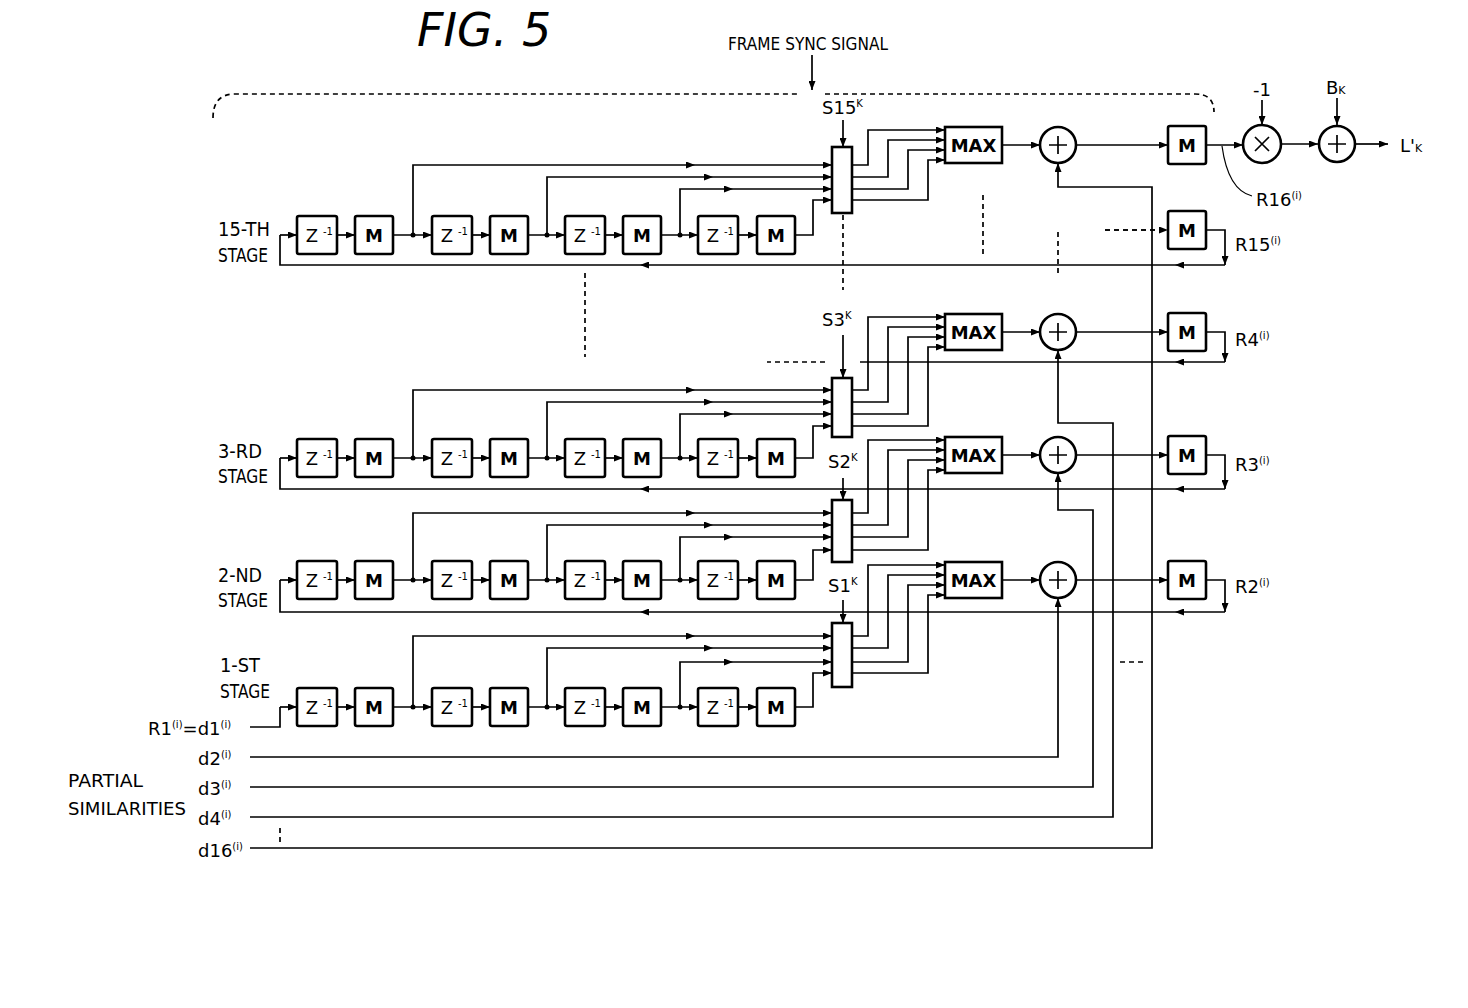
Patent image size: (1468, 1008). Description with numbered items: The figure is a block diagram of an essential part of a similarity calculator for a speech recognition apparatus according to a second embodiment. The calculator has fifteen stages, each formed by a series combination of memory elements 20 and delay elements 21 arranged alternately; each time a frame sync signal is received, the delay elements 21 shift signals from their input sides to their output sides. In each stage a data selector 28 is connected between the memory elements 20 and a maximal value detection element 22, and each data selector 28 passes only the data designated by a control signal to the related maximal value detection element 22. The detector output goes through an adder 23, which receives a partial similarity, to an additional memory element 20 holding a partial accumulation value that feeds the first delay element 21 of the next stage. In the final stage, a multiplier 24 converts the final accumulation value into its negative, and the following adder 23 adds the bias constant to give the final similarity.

The memory element 20 is at (390, 216).
The delay element 21 is at (332, 216).
The maximal value detection element 22 is at (1004, 134).
The adder 23 is at (1077, 133).
The multiplier 24 is at (1272, 126).
The data selector 28 is at (828, 151).